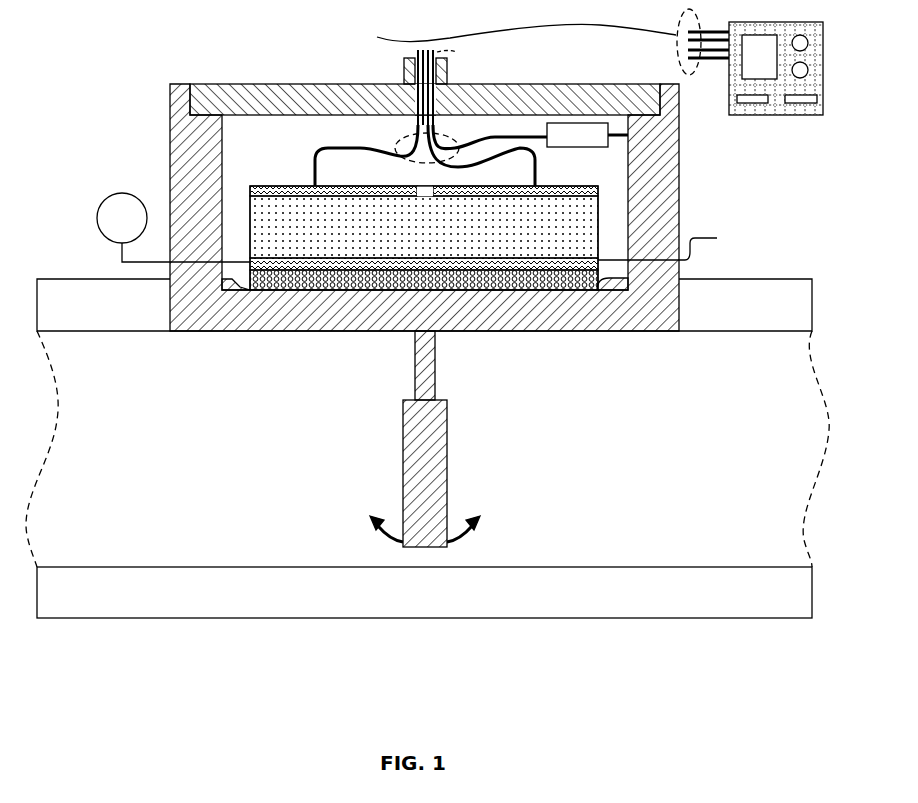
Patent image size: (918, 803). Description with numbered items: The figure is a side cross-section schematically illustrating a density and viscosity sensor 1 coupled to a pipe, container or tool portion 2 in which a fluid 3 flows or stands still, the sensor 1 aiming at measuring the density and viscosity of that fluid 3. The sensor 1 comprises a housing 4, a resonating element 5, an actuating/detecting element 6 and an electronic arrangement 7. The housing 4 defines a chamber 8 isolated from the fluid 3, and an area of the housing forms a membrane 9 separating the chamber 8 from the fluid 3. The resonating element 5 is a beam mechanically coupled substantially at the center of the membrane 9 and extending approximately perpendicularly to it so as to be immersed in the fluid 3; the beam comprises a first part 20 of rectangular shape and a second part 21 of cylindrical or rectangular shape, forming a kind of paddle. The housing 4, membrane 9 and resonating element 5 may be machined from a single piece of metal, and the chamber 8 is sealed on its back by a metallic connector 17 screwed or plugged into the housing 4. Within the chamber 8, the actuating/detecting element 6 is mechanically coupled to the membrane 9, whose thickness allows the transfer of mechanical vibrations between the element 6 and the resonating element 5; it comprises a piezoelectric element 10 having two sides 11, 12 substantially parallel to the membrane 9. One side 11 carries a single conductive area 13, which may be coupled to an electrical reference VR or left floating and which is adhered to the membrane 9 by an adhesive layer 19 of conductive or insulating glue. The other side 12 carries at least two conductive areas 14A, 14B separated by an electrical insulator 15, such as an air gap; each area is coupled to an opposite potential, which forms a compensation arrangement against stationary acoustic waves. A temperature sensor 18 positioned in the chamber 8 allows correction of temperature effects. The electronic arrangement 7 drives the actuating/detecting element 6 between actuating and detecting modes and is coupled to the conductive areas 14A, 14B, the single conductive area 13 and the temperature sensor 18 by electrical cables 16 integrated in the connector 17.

The density and viscosity sensor 1 is at (151, 69).
The pipe or container or tool portion 2 is at (78, 279).
The fluid 3 is at (266, 470).
The housing 4 is at (162, 176).
The resonating element 5 is at (455, 452).
The actuating/detecting element 6 is at (612, 208).
The electronic arrangement 7 is at (778, 127).
The chamber 8 is at (243, 145).
The membrane 9 is at (500, 331).
The piezoelectric element 10 is at (487, 233).
The first side of the piezoelectric element 11 is at (265, 258).
The second side of the piezoelectric element 12 is at (250, 208).
The single conductive area 13 is at (672, 244).
The first conductive area 14A is at (302, 186).
The second conductive area 14B is at (552, 186).
The electrical insulator 15 is at (424, 187).
The electrical cables 16 is at (397, 147).
The metallic connector 17 is at (447, 70).
The temperature sensor 18 is at (590, 144).
The adhesive layer 19 is at (612, 279).
The first part of the beam 20 is at (410, 472).
The second part of the beam 21 is at (415, 378).